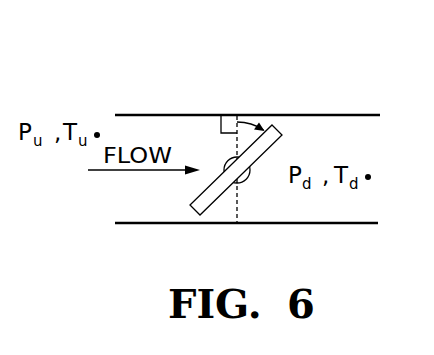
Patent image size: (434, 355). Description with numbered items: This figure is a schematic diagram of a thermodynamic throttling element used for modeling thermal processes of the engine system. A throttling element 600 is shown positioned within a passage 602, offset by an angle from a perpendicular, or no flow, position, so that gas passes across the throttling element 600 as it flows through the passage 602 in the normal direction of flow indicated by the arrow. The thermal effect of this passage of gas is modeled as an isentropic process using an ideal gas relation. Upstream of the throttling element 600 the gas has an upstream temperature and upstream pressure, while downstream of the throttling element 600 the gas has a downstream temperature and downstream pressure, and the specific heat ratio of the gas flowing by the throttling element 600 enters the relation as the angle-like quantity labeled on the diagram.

The throttling element 600 is at (282, 136).
The passage 602 is at (167, 115).